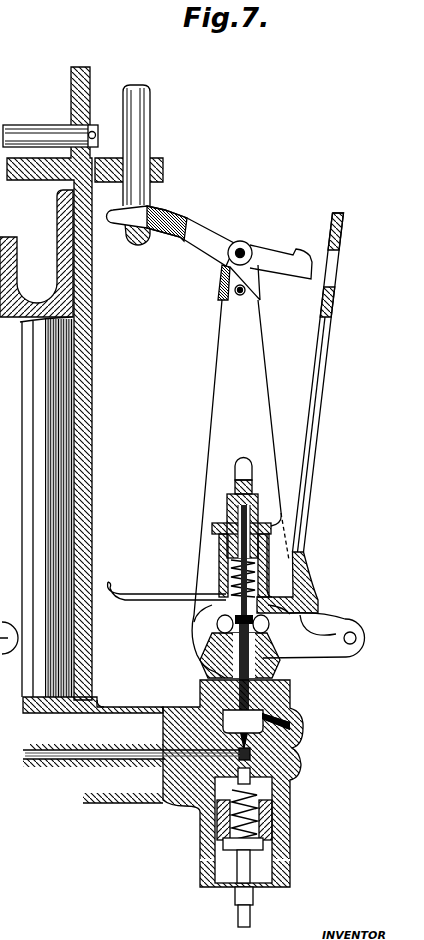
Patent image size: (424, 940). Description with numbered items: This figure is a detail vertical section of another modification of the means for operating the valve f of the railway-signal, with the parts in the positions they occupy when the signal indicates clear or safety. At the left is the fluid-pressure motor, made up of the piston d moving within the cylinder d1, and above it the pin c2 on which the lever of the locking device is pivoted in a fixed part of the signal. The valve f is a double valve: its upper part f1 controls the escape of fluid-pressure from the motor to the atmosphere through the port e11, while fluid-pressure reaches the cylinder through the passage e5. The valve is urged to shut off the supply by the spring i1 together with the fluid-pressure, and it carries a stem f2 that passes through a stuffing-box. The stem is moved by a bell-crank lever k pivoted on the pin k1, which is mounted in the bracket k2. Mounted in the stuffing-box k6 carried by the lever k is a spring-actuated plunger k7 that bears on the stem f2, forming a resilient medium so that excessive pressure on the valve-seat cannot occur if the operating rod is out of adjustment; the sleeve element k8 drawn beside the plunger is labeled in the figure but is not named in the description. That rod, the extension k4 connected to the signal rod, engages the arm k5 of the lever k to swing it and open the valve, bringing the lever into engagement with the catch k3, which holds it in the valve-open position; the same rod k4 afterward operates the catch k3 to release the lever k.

The pin c2 is at (21, 128).
The piston d is at (17, 307).
The cylinder d1 is at (93, 447).
The extension k4 is at (151, 133).
The catch k3 is at (215, 238).
The bracket k2 is at (241, 489).
The bell-crank lever k is at (303, 523).
The sleeve housing k8 is at (264, 563).
The stuffing-box k6 is at (227, 553).
The spring-actuated plunger k7 is at (258, 607).
The arm k5 is at (153, 603).
The pin k1 is at (354, 636).
The valve stem f2 is at (291, 685).
The port e11 is at (297, 718).
The upper valve part f1 is at (260, 734).
The valve f is at (268, 778).
The spring i1 is at (230, 823).
The passage e5 is at (88, 757).